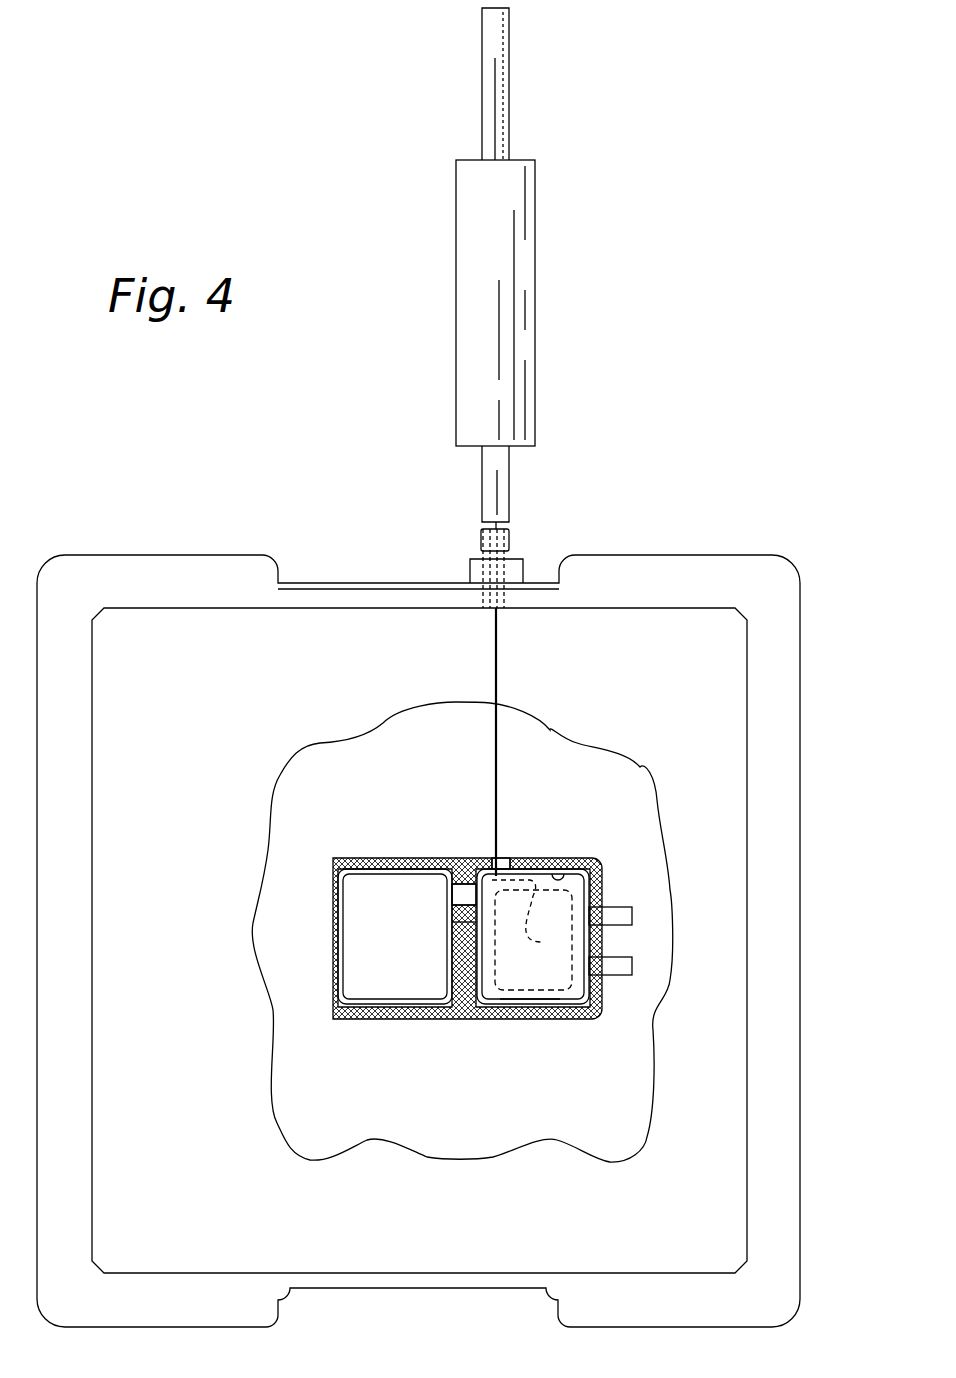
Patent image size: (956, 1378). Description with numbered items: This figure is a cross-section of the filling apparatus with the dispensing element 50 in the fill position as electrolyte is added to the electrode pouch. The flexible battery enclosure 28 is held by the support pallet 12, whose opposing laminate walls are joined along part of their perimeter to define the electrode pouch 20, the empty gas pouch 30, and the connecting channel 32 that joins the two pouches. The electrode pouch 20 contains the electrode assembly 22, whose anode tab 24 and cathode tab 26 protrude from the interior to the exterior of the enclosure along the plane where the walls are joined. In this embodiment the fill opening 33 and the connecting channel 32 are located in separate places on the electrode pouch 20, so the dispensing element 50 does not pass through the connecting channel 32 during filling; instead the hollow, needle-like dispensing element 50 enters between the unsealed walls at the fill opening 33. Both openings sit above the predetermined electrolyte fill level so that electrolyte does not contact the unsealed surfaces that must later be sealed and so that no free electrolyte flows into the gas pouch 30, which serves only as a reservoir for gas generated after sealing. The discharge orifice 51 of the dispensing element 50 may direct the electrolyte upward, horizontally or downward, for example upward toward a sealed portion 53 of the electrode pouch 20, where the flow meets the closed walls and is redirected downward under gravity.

The support pallet 12 is at (653, 570).
The electrode pouch 20 is at (542, 997).
The electrode assembly 22 is at (523, 990).
The anode tab 24 is at (618, 907).
The cathode tab 26 is at (617, 973).
The flexible battery enclosure 28 is at (364, 826).
The gas pouch 30 is at (392, 962).
The connecting channel 32 is at (462, 892).
The fill opening 33 is at (503, 857).
The dispensing element 50 is at (496, 778).
The discharge orifice 51 is at (533, 935).
The sealed portion 53 is at (568, 871).